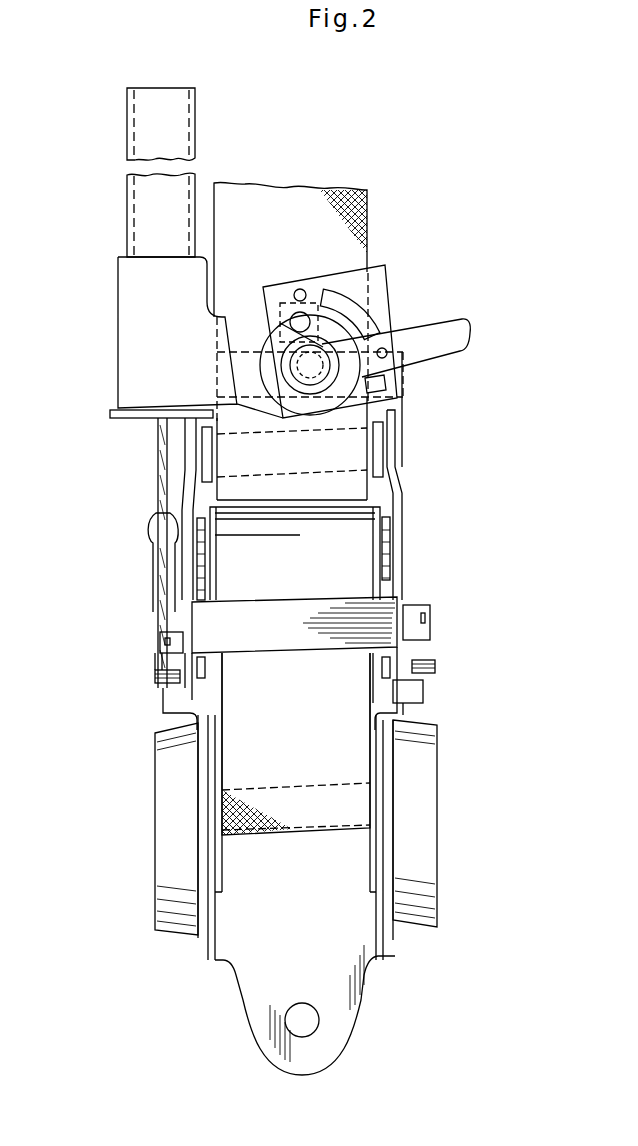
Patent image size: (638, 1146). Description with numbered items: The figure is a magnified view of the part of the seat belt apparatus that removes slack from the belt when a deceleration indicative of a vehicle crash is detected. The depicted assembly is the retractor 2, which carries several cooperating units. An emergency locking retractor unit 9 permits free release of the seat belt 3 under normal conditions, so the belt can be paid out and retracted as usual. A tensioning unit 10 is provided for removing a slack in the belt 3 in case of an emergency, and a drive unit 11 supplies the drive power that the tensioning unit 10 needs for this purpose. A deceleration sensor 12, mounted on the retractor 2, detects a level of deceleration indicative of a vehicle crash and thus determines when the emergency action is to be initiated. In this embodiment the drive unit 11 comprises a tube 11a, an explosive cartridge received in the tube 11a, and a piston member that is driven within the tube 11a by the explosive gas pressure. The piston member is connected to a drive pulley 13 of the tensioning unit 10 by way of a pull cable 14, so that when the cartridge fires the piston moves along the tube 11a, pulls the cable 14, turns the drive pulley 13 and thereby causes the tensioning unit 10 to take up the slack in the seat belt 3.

The retractor 2 is at (522, 436).
The seat belt 3 is at (305, 727).
The emergency locking retractor unit 9 is at (433, 863).
The tensioning unit 10 is at (441, 569).
The drive unit 11 is at (128, 366).
The tube 11a is at (130, 236).
The deceleration sensor 12 is at (424, 297).
The drive pulley 13 is at (148, 536).
The pull cable 14 is at (157, 496).